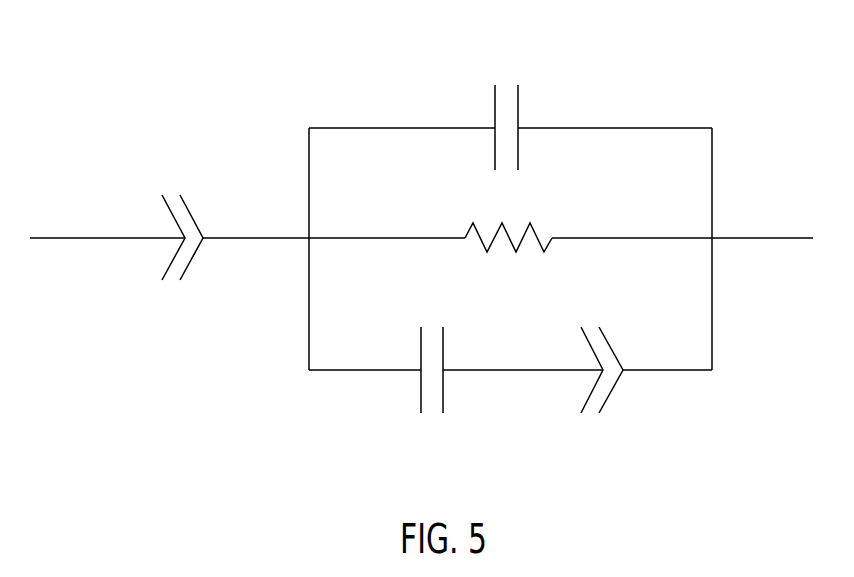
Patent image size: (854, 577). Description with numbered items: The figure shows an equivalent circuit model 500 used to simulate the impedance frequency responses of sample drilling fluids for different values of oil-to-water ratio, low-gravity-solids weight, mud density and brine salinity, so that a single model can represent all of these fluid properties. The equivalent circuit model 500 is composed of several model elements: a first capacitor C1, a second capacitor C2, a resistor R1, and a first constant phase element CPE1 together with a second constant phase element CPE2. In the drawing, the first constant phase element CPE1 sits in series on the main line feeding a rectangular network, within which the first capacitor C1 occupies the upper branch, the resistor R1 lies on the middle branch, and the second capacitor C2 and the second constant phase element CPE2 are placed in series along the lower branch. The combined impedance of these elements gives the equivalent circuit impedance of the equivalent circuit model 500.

The equivalent circuit model 500 is at (421, 242).
The first constant phase element CPE1 is at (173, 261).
The first capacitor C1 is at (480, 127).
The resistor R1 is at (508, 264).
The second capacitor C2 is at (436, 396).
The second constant phase element CPE2 is at (600, 396).